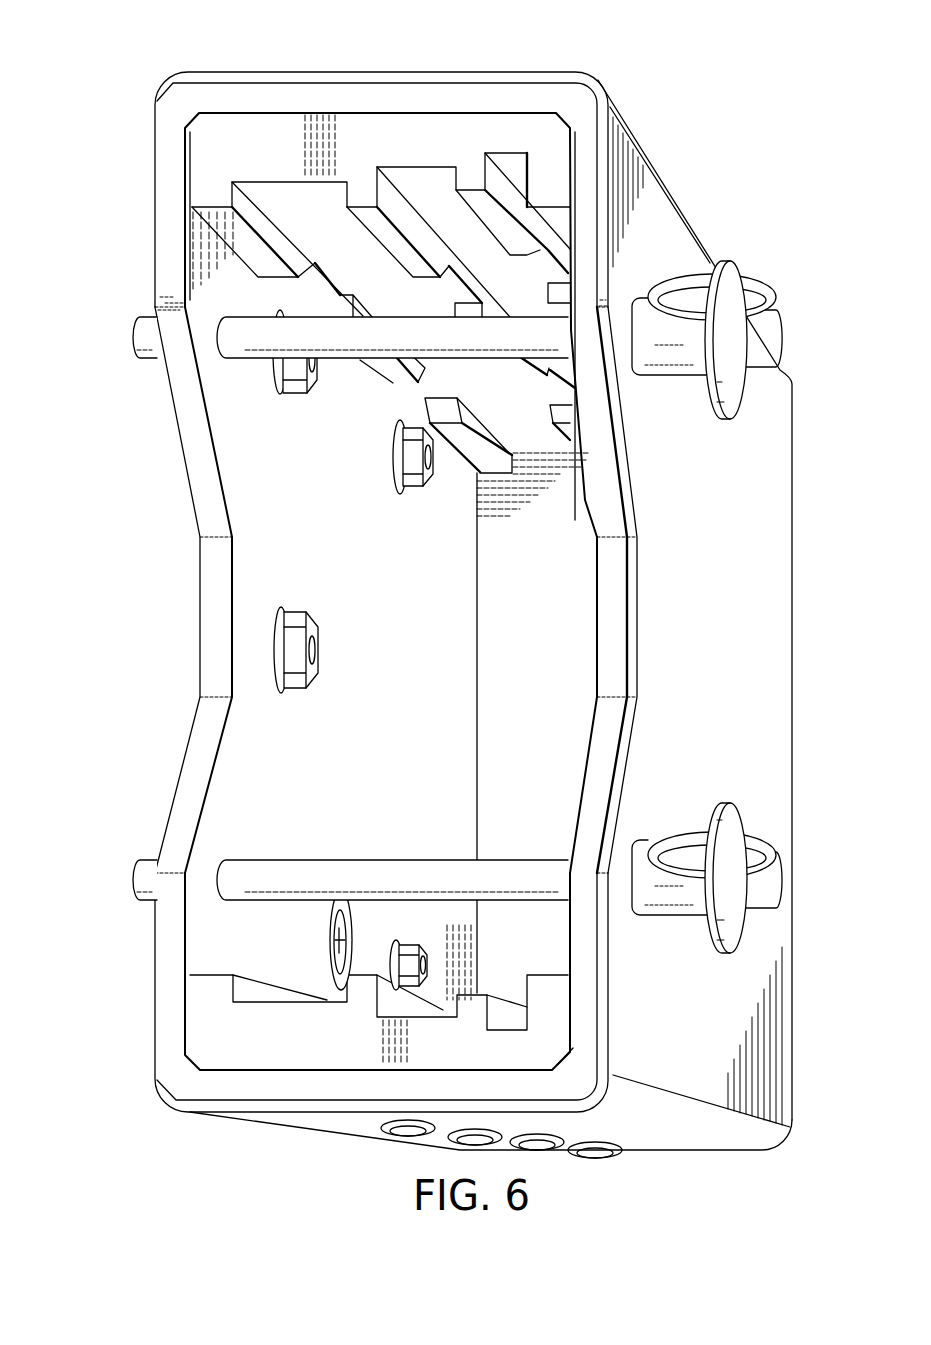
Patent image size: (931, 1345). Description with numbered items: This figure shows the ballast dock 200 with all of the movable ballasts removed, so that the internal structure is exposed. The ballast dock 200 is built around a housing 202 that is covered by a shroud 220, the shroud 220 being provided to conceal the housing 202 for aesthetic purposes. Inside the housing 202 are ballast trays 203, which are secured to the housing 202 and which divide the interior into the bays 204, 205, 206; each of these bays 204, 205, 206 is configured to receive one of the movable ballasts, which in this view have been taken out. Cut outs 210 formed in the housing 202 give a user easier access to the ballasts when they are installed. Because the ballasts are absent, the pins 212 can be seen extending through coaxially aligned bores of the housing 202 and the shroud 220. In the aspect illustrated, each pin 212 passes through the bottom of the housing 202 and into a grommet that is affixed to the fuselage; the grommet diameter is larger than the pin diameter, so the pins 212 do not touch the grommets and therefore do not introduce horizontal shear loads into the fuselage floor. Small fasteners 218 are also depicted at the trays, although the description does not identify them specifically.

The ballast dock 200 is at (720, 136).
The housing 202 is at (157, 217).
The ballast trays 203 is at (222, 92).
The bay 204 is at (515, 168).
The bay 205 is at (427, 185).
The bay 206 is at (300, 192).
The cut outs 210 is at (193, 466).
The pins 212 is at (240, 350).
The nut 218 is at (317, 378).
The shroud 220 is at (718, 1143).